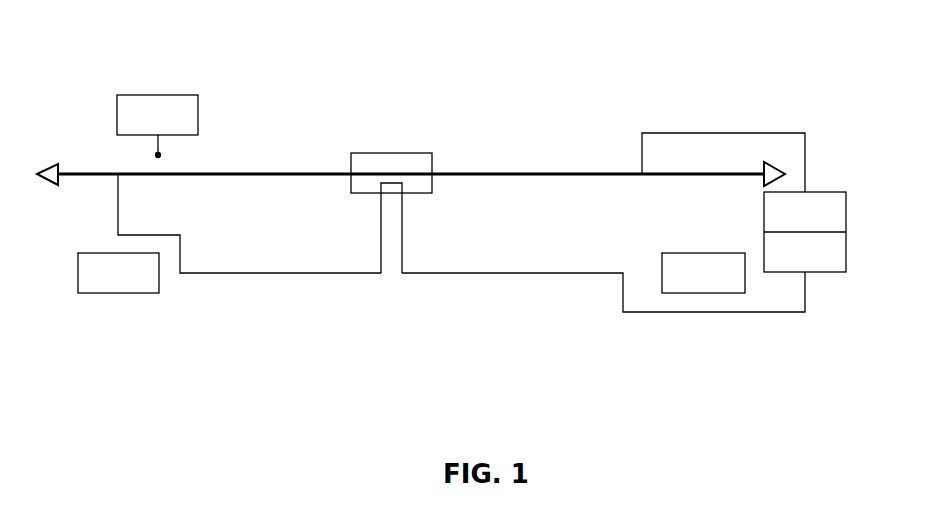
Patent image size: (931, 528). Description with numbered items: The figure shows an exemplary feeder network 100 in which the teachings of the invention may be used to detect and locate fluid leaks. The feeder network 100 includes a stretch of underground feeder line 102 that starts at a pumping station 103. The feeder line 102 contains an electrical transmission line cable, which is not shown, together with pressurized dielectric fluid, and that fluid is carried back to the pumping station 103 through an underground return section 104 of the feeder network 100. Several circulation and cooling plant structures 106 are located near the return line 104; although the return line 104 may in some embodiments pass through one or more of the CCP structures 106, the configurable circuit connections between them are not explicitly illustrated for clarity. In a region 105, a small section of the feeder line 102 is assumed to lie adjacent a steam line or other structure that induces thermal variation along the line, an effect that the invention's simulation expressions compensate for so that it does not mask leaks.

The feeder network 100 is at (673, 74).
The feeder line 102 is at (499, 178).
The pumping station 103 is at (203, 124).
The return section 104 is at (294, 283).
The region 105 is at (347, 185).
The circulation and cooling plant (CCP) structures 106 is at (411, 273).